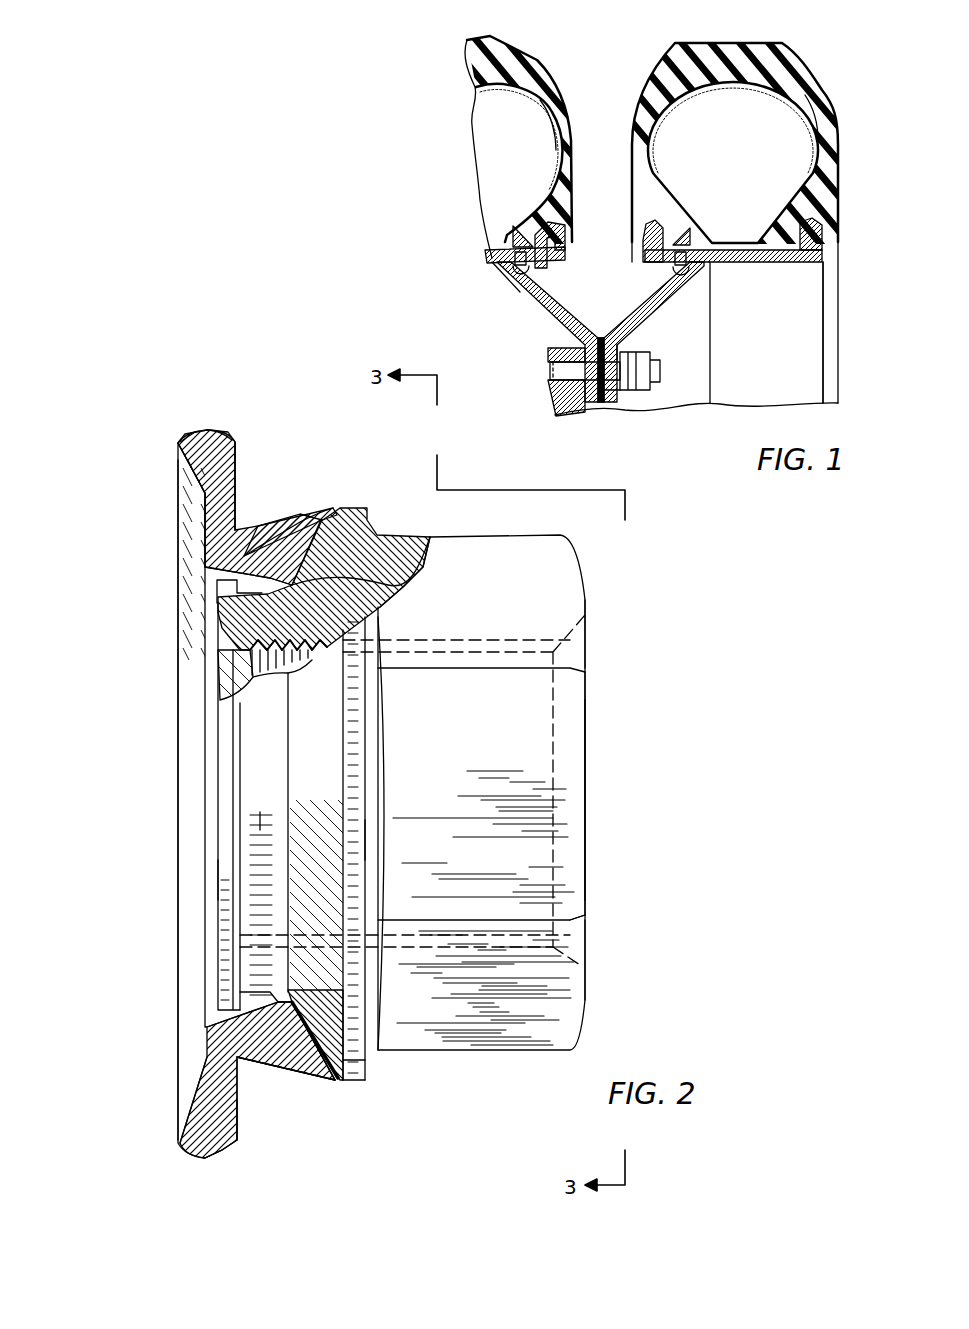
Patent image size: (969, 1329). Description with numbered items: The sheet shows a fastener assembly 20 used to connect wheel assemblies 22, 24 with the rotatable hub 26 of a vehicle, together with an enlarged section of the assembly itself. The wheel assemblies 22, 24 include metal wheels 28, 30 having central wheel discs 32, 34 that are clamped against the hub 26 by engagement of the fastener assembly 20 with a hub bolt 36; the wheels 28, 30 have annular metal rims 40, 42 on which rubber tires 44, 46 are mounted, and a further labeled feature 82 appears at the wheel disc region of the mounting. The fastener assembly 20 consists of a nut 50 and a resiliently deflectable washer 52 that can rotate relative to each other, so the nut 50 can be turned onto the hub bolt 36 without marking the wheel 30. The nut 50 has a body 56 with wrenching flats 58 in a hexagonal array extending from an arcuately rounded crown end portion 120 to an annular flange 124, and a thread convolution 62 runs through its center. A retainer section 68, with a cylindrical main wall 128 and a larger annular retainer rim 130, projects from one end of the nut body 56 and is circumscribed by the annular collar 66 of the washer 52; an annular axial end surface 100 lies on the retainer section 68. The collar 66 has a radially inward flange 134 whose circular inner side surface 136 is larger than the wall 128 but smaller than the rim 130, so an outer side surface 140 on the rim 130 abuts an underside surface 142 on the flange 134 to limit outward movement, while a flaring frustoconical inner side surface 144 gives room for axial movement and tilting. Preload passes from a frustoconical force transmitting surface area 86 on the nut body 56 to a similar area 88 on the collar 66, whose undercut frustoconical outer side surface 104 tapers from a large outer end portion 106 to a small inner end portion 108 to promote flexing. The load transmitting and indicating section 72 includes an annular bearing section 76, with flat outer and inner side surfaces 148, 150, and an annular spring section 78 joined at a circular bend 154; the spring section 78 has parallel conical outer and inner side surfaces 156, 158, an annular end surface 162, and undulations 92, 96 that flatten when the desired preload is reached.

In FIG. 1, the fastener assembly 20 is at (663, 360).
In FIG. 2, the fastener assembly 20 is at (130, 366).
In FIG. 1, the wheel assembly 22 is at (548, 70).
In FIG. 1, the wheel assembly 24 is at (827, 62).
In FIG. 1, the rotatable hub 26 is at (560, 402).
In FIG. 1, the metal wheel 28 is at (551, 319).
In FIG. 1, the metal wheel 30 is at (797, 301).
In FIG. 1, the central wheel disc 32 is at (581, 270).
In FIG. 1, the central wheel disc 34 is at (623, 302).
In FIG. 1, the hub bolt 36 is at (552, 370).
In FIG. 1, the annular metal rim 40 is at (490, 262).
In FIG. 1, the annular metal rim 42 is at (812, 330).
In FIG. 1, the rubber tire 44 is at (558, 118).
In FIG. 1, the rubber tire 46 is at (813, 100).
In FIG. 1, the nut 50 is at (647, 398).
In FIG. 2, the nut 50 is at (603, 590).
In FIG. 1, the washer 52 is at (627, 408).
In FIG. 2, the washer 52 is at (181, 1163).
In FIG. 2, the nut body 56 is at (582, 758).
In FIG. 2, the wrenching flats 58 is at (582, 622).
In FIG. 2, the thread convolution 62 is at (302, 676).
In FIG. 2, the annular collar 66 is at (326, 1088).
In FIG. 2, the retainer section 68 is at (264, 820).
In FIG. 2, the load transmitting and indicating section 72 is at (222, 1156).
In FIG. 2, the annular bearing section 76 is at (228, 1058).
In FIG. 2, the annular spring section 78 is at (192, 1124).
In FIG. 1, the rim wall edge 82 is at (630, 350).
In FIG. 2, the frustoconical force transmitting surface area 86 is at (326, 836).
In FIG. 2, the frustoconical force transmitting area 88 is at (342, 1090).
In FIG. 2, the undulation 92 is at (234, 1146).
In FIG. 2, the undulation 96 is at (237, 462).
In FIG. 2, the annular axial end surface 100 is at (218, 878).
In FIG. 2, the frustoconical outer side surface 104 is at (321, 1081).
In FIG. 2, the circular outer end portion 106 is at (332, 1100).
In FIG. 2, the circular inner end portion 108 is at (281, 1070).
In FIG. 2, the crown end portion 120 is at (578, 912).
In FIG. 2, the annular flange 124 is at (360, 757).
In FIG. 2, the cylindrical main wall 128 is at (258, 778).
In FIG. 2, the annular retainer rim 130 is at (228, 728).
In FIG. 2, the annular flange 134 is at (388, 596).
In FIG. 2, the circular inner side surface 136 is at (362, 632).
In FIG. 2, the annular axially outer side surface 140 is at (232, 592).
In FIG. 2, the annular underside surface 142 is at (322, 520).
In FIG. 2, the frustoconical inner side surface 144 is at (272, 526).
In FIG. 2, the annular outer side surface 148 is at (245, 515).
In FIG. 2, the annular inner side surface 150 is at (203, 540).
In FIG. 2, the circular bend 154 is at (200, 500).
In FIG. 2, the outer side surface 156 is at (222, 432).
In FIG. 2, the inner side surface 158 is at (185, 463).
In FIG. 2, the annular end surface 162 is at (185, 432).